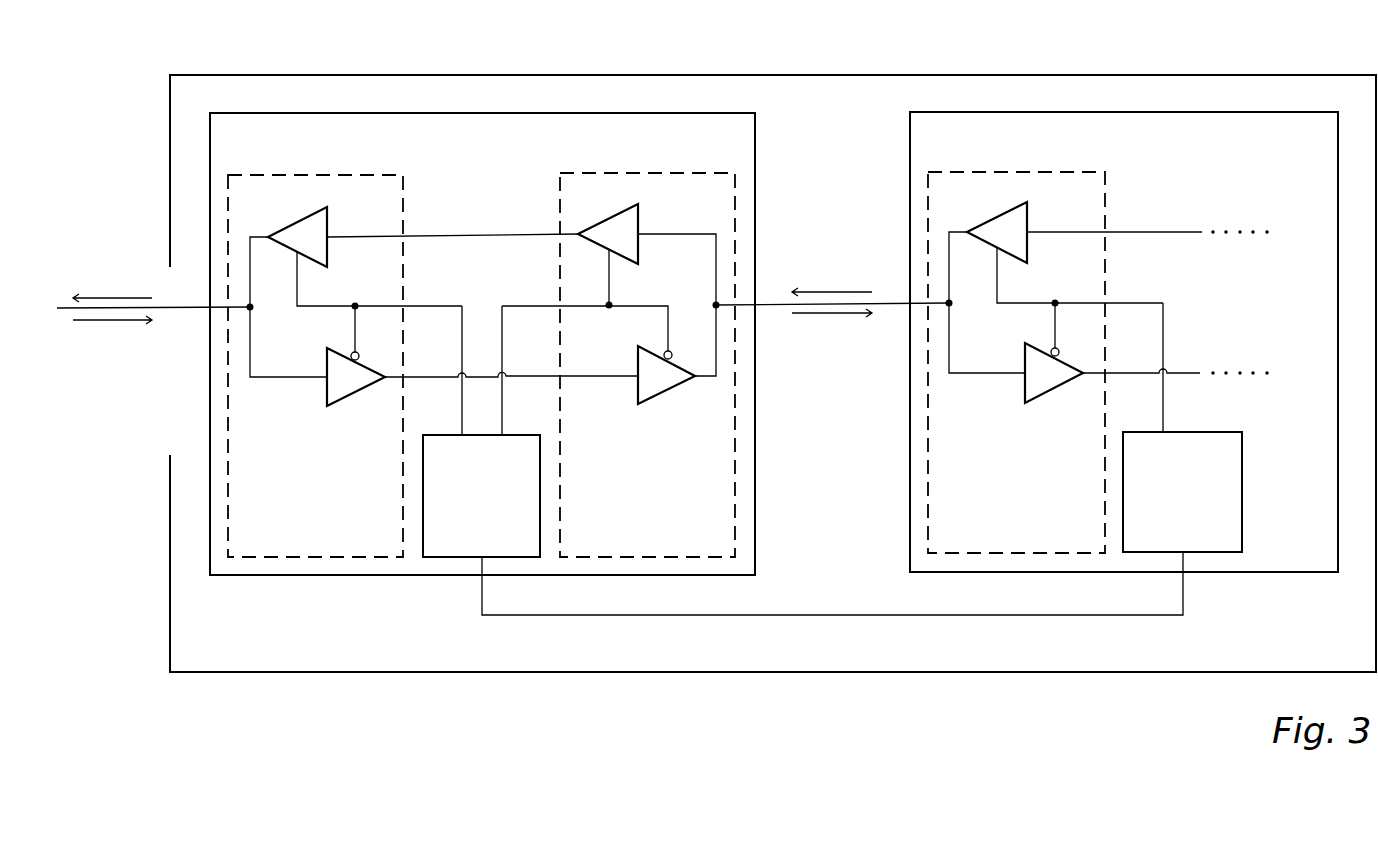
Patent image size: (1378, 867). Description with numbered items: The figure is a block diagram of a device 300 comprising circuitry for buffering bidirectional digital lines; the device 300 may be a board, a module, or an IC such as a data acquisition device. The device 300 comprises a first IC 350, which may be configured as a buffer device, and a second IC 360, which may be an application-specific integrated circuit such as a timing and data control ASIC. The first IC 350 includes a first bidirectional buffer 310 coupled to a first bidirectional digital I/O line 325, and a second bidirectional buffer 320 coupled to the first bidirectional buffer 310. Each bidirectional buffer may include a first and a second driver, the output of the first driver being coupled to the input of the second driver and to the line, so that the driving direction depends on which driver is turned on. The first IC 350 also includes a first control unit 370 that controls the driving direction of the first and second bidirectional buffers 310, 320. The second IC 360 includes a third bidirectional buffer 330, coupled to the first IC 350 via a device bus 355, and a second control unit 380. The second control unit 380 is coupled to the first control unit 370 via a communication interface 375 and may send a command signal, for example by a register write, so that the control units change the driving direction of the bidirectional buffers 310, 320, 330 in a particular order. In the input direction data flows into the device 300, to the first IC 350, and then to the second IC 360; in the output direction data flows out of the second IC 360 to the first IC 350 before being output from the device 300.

The device 300 is at (1368, 660).
The first bidirectional buffer 310 is at (298, 543).
The second bidirectional buffer 320 is at (631, 543).
The first bidirectional digital I/O line 325 is at (190, 308).
The third bidirectional buffer 330 is at (998, 543).
The first IC 350 is at (538, 147).
The device bus 355 is at (890, 305).
The second IC 360 is at (1198, 145).
The first control unit 370 is at (465, 543).
The communication interface 375 is at (835, 615).
The second control unit 380 is at (1166, 543).